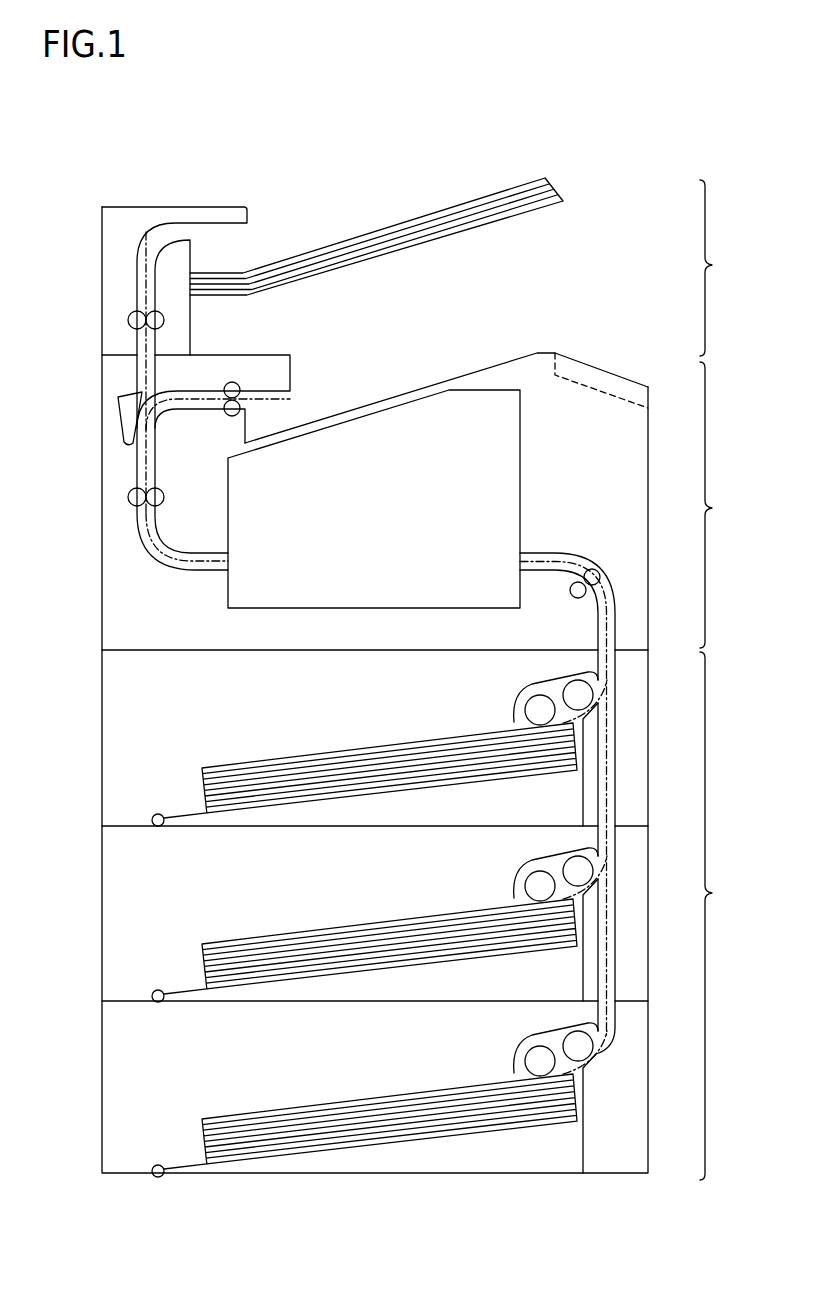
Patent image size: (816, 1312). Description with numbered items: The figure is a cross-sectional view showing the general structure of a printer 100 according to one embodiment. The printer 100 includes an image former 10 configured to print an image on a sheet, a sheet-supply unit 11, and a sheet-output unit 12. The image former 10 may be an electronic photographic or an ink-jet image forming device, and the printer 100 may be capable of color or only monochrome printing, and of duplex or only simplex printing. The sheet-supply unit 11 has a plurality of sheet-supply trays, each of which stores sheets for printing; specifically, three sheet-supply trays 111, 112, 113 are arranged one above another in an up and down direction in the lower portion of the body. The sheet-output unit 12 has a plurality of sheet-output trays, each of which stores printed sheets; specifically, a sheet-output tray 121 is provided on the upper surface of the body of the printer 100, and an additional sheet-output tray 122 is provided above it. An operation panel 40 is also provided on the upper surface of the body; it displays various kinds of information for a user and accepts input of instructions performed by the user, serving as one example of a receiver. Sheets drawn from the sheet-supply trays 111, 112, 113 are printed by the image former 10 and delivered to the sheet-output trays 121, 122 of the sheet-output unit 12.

The printer 100 is at (320, 148).
The image former 10 is at (483, 741).
The sheet-supply unit 11 is at (385, 915).
The sheet-output unit 12 is at (463, 267).
The operation panel 40 is at (592, 373).
The sheet-supply tray 111 is at (113, 750).
The sheet-supply tray 112 is at (113, 925).
The sheet-supply tray 113 is at (113, 1100).
The sheet-output tray 121 is at (468, 372).
The additional sheet-output tray 122 is at (562, 195).